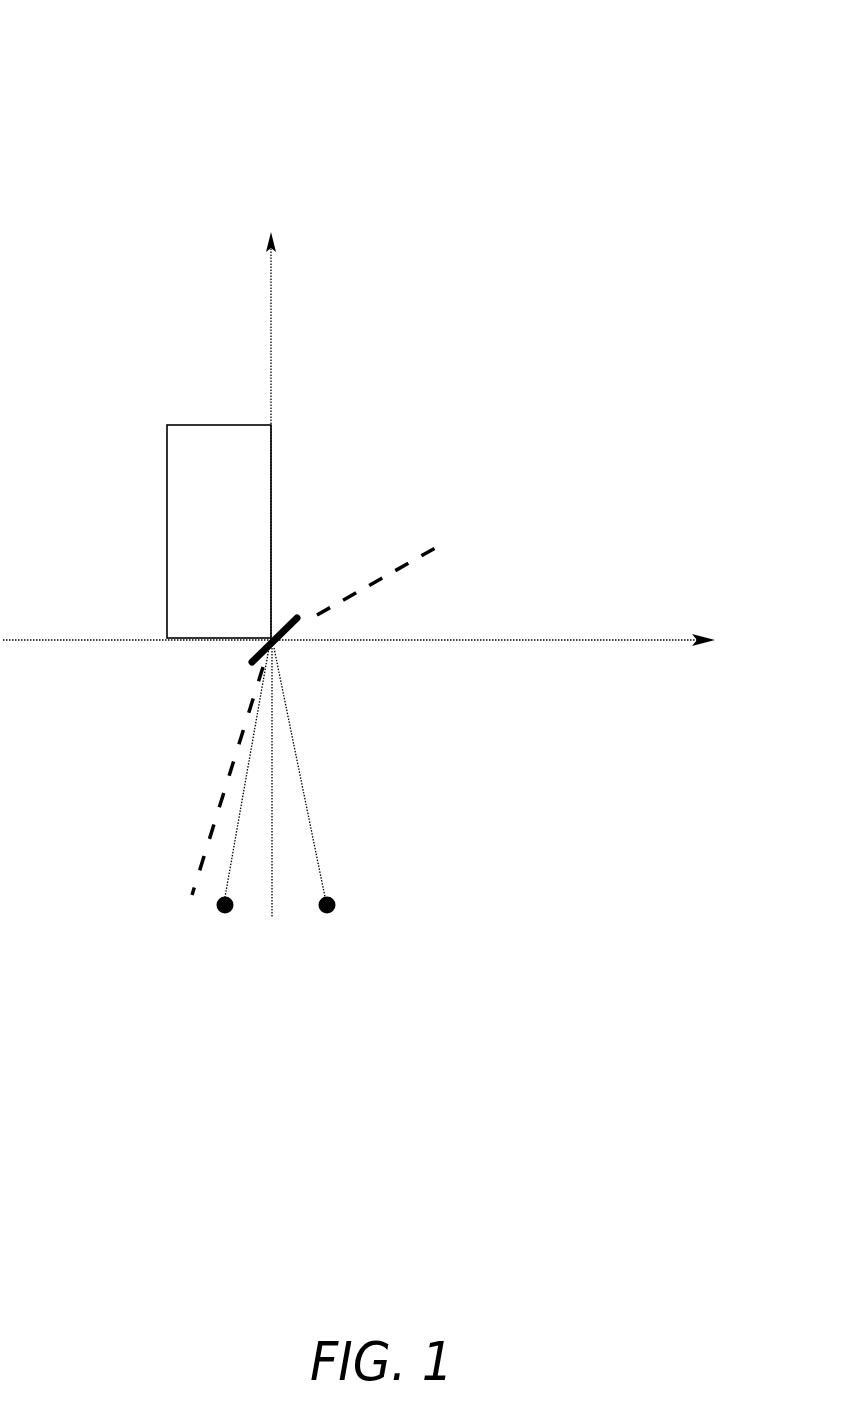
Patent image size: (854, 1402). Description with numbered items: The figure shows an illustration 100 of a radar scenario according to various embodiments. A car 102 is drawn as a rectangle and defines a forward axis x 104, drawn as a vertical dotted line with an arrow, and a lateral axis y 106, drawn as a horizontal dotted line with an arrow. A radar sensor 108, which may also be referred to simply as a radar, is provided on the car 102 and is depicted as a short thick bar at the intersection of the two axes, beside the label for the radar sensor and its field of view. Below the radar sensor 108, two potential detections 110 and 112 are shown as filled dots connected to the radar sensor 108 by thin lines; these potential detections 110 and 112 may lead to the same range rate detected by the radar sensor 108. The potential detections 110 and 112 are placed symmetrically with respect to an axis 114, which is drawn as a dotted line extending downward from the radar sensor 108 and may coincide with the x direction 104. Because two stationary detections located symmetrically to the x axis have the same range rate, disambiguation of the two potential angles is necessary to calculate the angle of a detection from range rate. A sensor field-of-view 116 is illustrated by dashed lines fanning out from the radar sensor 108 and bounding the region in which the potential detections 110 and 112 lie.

The illustration 100 is at (106, 45).
The car 102 is at (257, 474).
The forward axis x 104 is at (272, 270).
The lateral axis y 106 is at (663, 638).
The radar sensor 108 is at (287, 607).
The potential detection 110 is at (215, 903).
The potential detection 112 is at (330, 895).
The axis 114 is at (275, 778).
The sensor field-of-view 116 is at (429, 545).